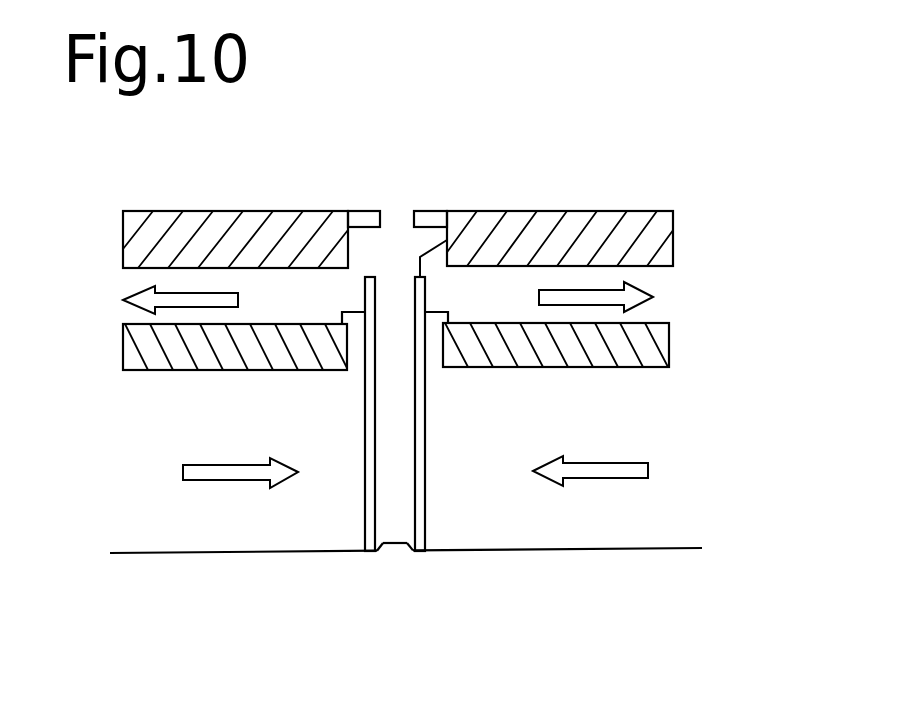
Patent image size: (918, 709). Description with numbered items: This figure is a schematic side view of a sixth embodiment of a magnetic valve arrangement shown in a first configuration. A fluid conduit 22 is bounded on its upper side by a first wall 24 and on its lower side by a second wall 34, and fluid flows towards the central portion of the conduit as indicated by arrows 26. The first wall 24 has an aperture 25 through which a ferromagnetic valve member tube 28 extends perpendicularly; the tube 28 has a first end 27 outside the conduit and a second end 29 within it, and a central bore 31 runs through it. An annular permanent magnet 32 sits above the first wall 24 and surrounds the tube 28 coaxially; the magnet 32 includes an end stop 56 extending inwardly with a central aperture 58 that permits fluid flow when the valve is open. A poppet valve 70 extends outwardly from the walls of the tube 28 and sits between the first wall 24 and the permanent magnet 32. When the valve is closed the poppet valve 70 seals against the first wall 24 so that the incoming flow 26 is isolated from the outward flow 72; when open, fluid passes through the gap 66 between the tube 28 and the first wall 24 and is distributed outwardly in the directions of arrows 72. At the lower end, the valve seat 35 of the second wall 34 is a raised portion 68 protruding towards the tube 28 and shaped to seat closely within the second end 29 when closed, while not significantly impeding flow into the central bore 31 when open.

The fluid conduit 22 is at (202, 525).
The first wall 24 is at (142, 358).
The aperture 25 is at (435, 347).
The arrows 26 is at (200, 470).
The first end 27 is at (463, 227).
The valve member tube 28 is at (427, 412).
The second end 29 is at (427, 525).
The central bore 31 is at (393, 502).
The permanent magnet 32 is at (618, 218).
The second wall 34 is at (313, 555).
The valve seat 35 is at (403, 557).
The end stop 56 is at (425, 217).
The aperture 58 is at (393, 215).
The gap 66 is at (355, 353).
The raised portion 68 is at (395, 555).
The poppet valve 70 is at (448, 313).
The arrows 72 is at (223, 302).